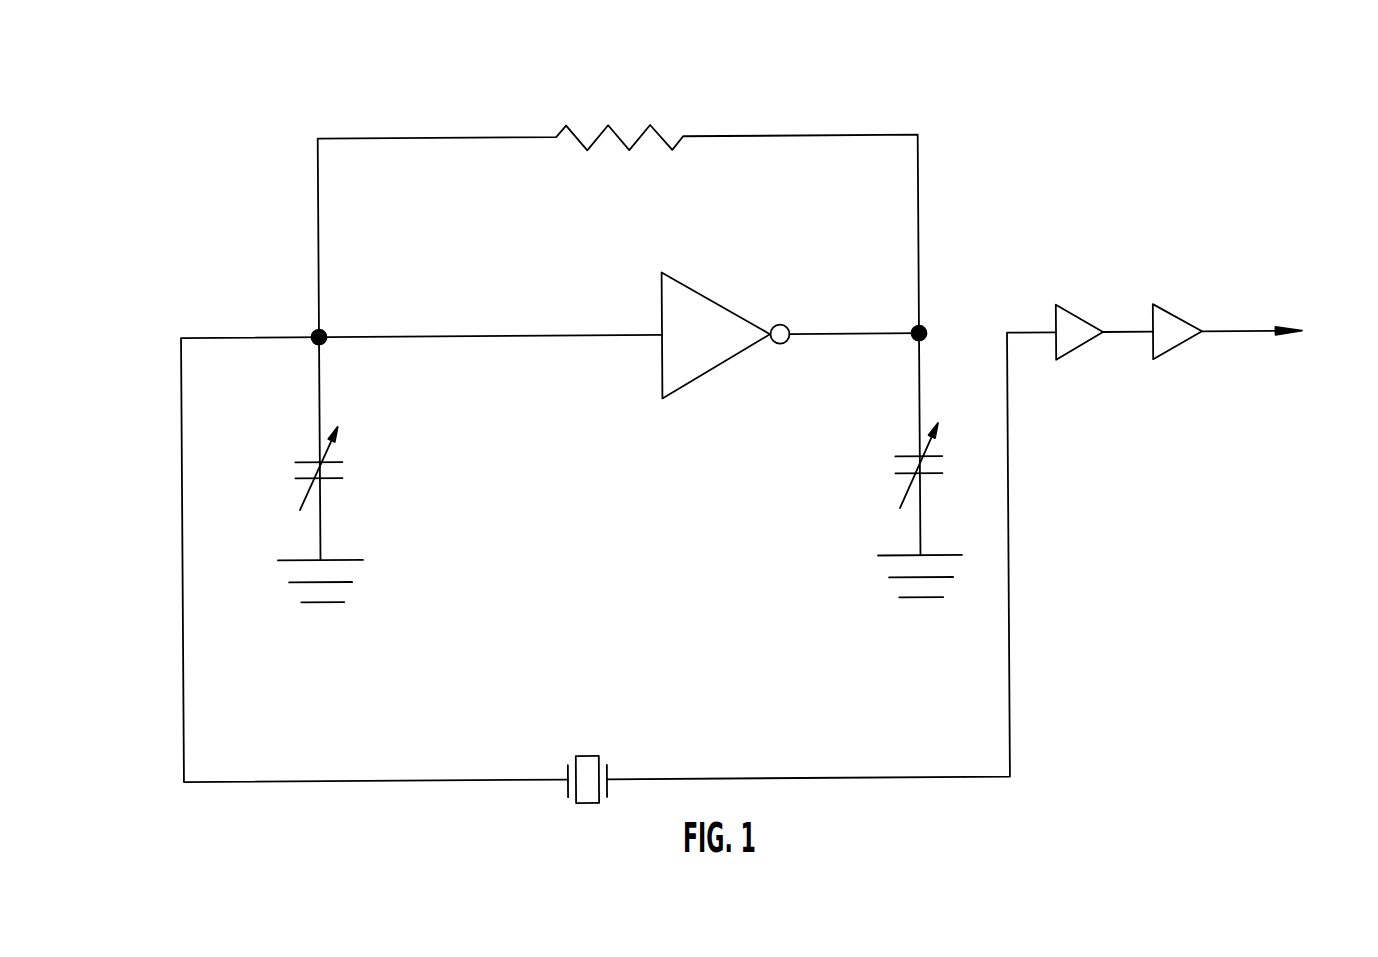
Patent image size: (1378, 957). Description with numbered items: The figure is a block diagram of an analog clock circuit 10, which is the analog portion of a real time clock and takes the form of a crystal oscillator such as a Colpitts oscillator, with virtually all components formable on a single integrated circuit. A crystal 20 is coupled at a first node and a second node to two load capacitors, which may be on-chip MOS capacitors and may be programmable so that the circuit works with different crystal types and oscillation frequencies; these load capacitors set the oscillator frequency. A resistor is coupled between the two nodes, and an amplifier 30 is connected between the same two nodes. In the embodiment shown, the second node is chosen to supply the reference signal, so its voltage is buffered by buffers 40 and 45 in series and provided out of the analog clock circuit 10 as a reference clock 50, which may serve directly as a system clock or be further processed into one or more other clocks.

The analog clock circuit 10 is at (189, 99).
The crystal 20 is at (604, 734).
The amplifier 30 is at (791, 327).
The buffer 40 is at (1105, 316).
The buffer 45 is at (1198, 314).
The reference clock 50 is at (1264, 313).